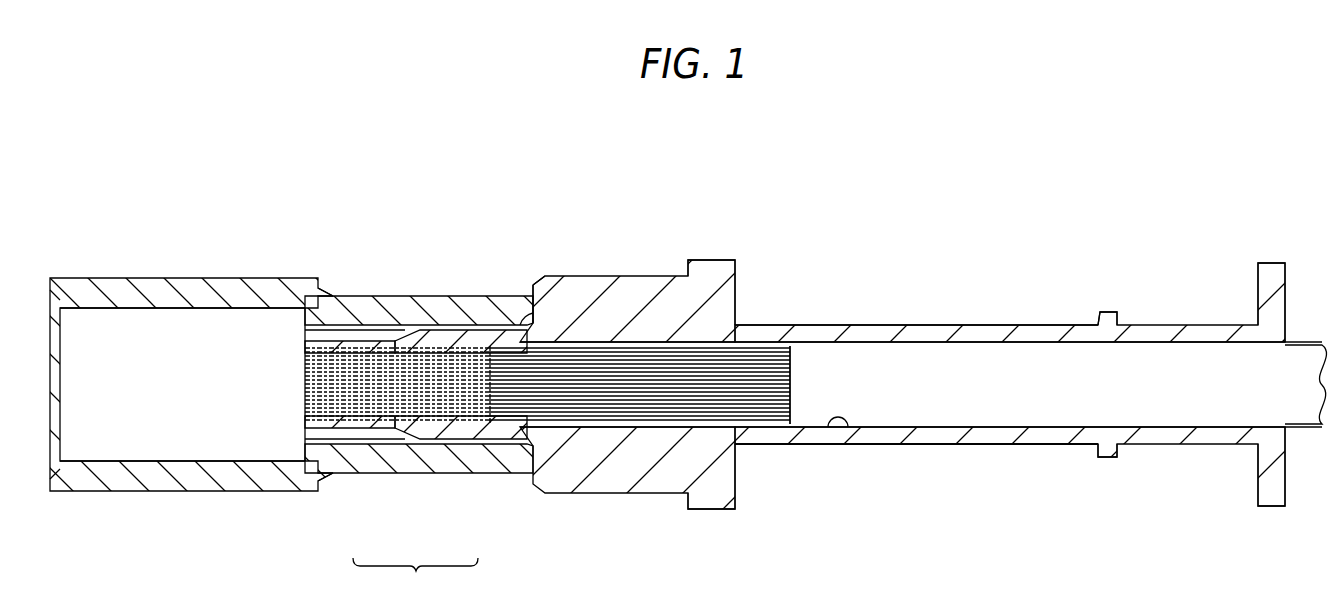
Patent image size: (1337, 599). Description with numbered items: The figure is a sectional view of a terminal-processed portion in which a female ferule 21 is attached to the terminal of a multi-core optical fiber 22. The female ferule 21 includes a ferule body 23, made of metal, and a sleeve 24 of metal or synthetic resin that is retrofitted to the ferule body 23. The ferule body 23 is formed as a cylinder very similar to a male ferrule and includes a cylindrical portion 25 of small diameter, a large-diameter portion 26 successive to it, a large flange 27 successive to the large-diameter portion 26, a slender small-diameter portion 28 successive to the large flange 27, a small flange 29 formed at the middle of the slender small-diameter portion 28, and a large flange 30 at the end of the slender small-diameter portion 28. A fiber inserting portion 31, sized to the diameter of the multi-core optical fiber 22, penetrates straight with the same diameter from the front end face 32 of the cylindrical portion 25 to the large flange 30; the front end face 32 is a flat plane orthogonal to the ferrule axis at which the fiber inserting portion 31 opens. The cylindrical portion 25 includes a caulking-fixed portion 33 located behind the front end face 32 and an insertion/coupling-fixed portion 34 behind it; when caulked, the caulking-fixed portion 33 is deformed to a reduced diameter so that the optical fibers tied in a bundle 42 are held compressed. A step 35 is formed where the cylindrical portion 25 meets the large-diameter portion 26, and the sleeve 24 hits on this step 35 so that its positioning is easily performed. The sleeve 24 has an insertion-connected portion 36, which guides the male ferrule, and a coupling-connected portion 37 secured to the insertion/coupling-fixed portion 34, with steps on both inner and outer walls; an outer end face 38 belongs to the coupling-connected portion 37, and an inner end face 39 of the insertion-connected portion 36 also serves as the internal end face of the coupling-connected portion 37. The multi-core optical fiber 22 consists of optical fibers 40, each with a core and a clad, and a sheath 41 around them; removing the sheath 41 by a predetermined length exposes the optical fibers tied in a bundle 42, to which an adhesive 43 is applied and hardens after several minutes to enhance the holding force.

The female ferule 21 is at (368, 216).
The multi-core optical fiber 22 is at (1022, 348).
The ferule body 23 is at (830, 320).
The sleeve 24 is at (118, 271).
The cylindrical portion 25 is at (415, 578).
The large-diameter portion 26 is at (641, 290).
The large flange 27 is at (706, 261).
The slender small-diameter portion 28 is at (917, 446).
The small flange 29 is at (1107, 459).
The large flange 30 is at (1268, 263).
The fiber inserting portion 31 is at (833, 428).
The front end face 32 is at (302, 427).
The caulking-fixed portion 33 is at (364, 428).
The insertion/coupling-fixed portion 34 is at (463, 440).
The step 35 is at (521, 296).
The insertion-connected portion 36 is at (205, 278).
The coupling-connected portion 37 is at (455, 295).
The outer end face 38 is at (562, 292).
The inner end face 39 is at (292, 278).
The optical fibers 40 is at (604, 398).
The sheath 41 is at (948, 366).
The optical fibers tied in a bundle 42 is at (670, 418).
The adhesive 43 is at (490, 392).